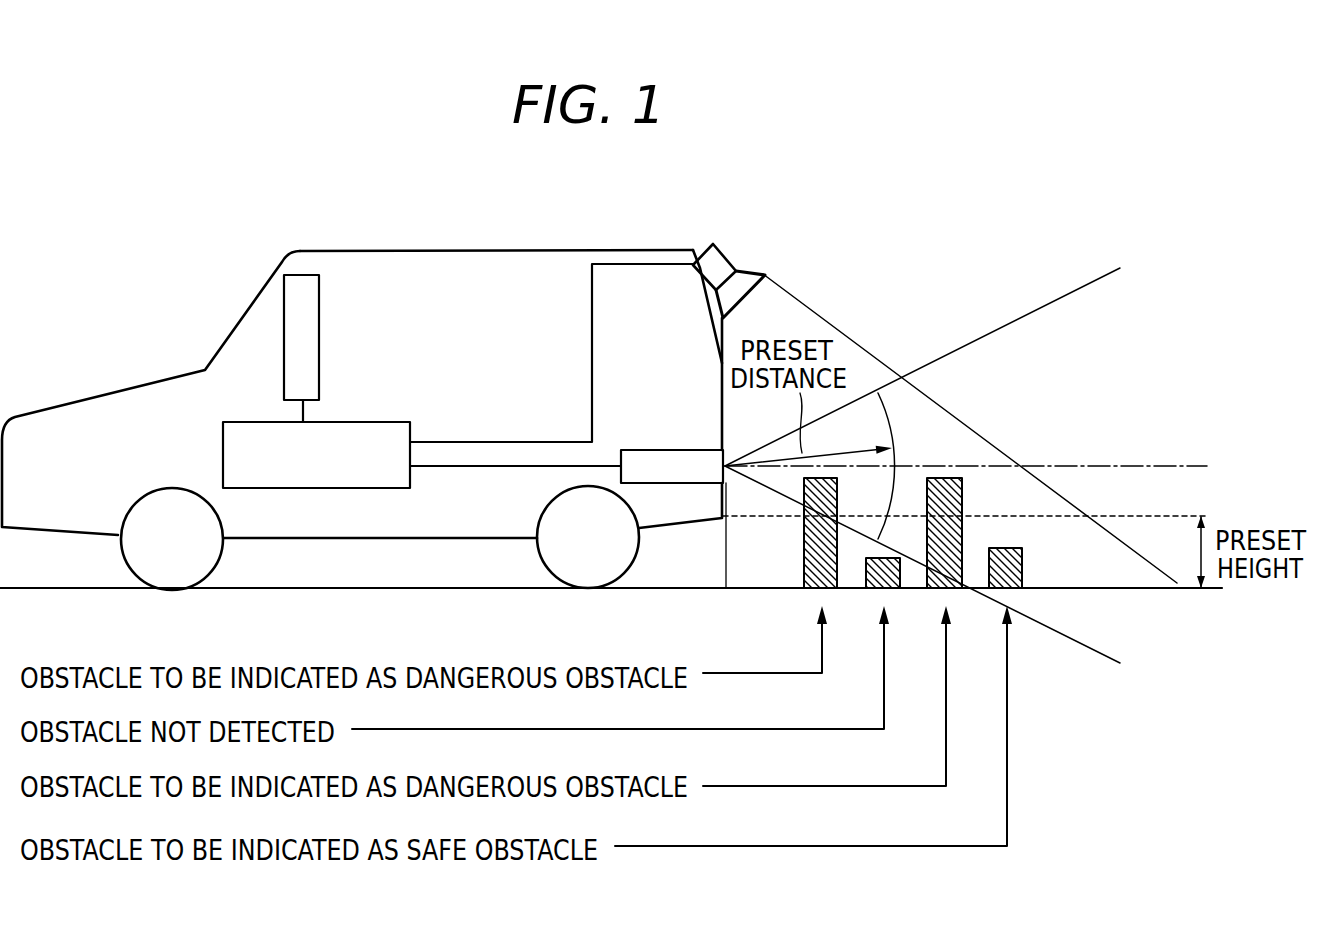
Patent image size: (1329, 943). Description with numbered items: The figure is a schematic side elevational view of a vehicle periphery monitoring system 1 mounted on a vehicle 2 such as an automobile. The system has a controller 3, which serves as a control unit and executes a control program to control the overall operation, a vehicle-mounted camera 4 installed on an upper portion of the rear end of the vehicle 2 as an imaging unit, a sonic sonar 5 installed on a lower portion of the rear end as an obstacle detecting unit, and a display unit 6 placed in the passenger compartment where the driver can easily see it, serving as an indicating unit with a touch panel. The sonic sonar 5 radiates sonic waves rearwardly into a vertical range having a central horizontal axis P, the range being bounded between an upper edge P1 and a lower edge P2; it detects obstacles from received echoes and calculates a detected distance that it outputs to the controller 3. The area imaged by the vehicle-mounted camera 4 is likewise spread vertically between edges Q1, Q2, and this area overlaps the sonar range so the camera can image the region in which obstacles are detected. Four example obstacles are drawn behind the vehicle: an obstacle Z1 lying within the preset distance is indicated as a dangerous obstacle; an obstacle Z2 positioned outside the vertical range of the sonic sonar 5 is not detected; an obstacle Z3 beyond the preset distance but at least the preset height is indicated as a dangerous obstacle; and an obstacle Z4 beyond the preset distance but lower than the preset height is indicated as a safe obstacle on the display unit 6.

The vehicle periphery monitoring system 1 is at (198, 439).
The vehicle 2 is at (457, 250).
The controller 3 is at (395, 422).
The vehicle-mounted camera 4 is at (710, 280).
The sonic sonar 5 is at (697, 450).
The display unit 6 is at (325, 297).
The central horizontal axis P is at (1069, 464).
The upper edge P1 is at (1035, 310).
The lower edge P2 is at (1062, 634).
The edge of imaged area Q1 is at (970, 430).
The edge of imaged area Q2 is at (726, 560).
The obstacle Z1 is at (830, 565).
The obstacle Z2 is at (898, 572).
The obstacle Z3 is at (957, 578).
The obstacle Z4 is at (1020, 570).